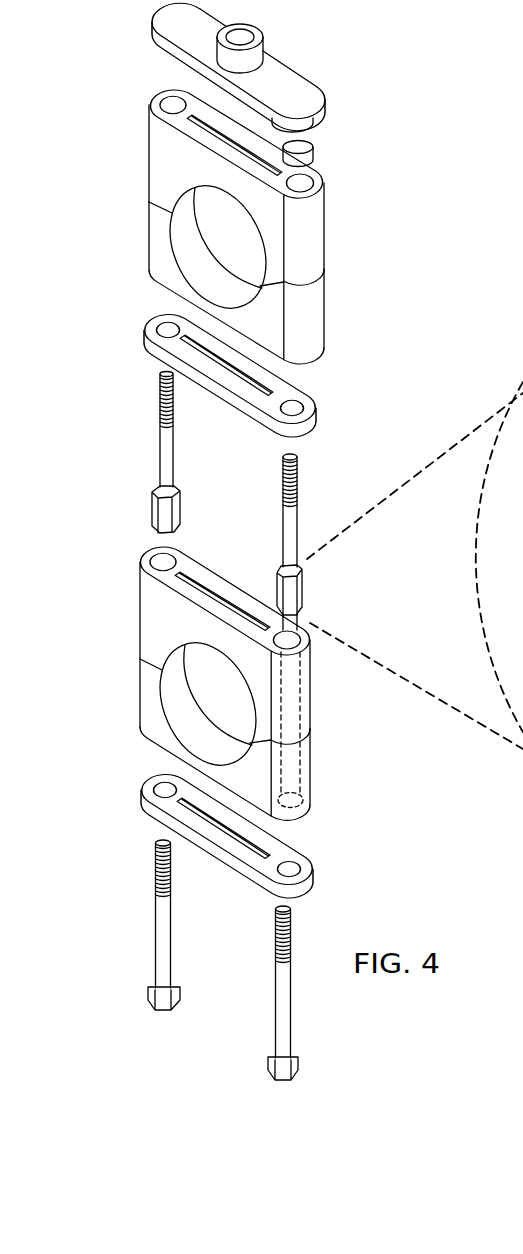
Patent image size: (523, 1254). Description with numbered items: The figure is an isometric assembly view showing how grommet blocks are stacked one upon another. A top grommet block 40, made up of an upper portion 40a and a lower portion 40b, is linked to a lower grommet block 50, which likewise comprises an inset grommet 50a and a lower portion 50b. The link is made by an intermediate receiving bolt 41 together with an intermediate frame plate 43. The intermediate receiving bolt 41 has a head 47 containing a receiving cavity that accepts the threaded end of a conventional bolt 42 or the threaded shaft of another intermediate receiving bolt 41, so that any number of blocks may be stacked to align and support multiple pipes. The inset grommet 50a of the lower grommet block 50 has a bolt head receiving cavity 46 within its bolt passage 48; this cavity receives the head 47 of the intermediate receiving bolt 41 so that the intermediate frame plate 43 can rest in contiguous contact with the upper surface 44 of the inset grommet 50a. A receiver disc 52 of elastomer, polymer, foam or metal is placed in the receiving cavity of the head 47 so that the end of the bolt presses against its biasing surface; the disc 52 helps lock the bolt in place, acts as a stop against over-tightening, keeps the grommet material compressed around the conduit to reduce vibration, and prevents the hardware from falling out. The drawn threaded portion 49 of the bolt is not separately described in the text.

The top grommet block 40 is at (288, 227).
The inset grommet of the top grommet block 40a is at (315, 238).
The lower portion of the top grommet block 40b is at (318, 313).
The intermediate receiving bolt 41 is at (158, 443).
The conventional bolt 42 is at (290, 1002).
The intermediate frame plate 43 is at (142, 330).
The upper surface of the inset grommet 44 is at (140, 565).
The bolt head receiving cavity 46 is at (300, 646).
The head of the intermediate receiving bolt 47 is at (293, 596).
The bolt passage 48 is at (291, 777).
The threaded end 49 is at (298, 472).
The lower grommet block 50 is at (281, 728).
The inset grommet of the lower grommet block 50a is at (260, 661).
The lower portion of the lower grommet block 50b is at (305, 780).
The receiver disc 52 is at (305, 152).